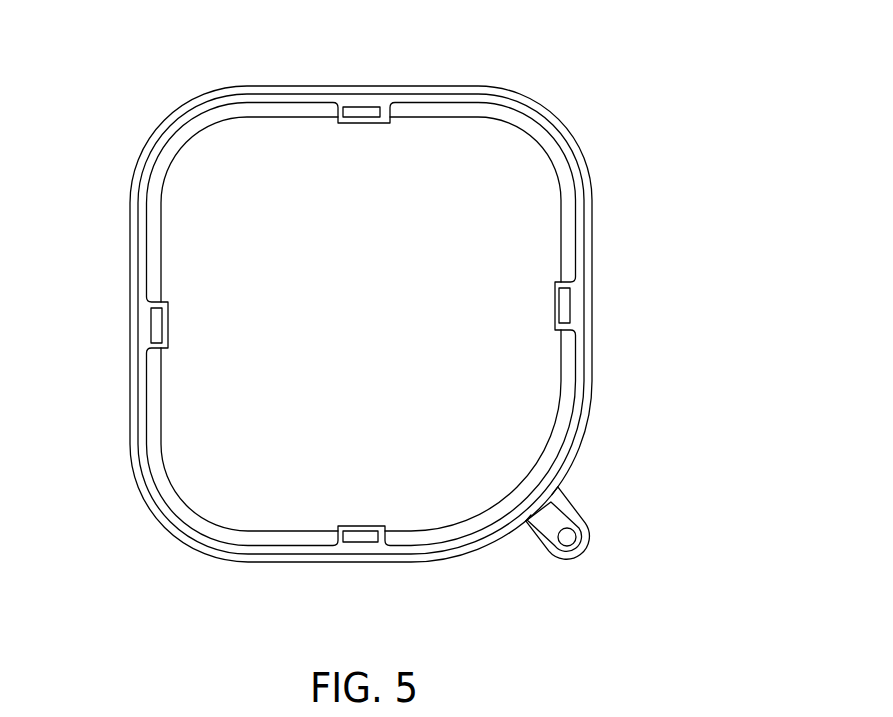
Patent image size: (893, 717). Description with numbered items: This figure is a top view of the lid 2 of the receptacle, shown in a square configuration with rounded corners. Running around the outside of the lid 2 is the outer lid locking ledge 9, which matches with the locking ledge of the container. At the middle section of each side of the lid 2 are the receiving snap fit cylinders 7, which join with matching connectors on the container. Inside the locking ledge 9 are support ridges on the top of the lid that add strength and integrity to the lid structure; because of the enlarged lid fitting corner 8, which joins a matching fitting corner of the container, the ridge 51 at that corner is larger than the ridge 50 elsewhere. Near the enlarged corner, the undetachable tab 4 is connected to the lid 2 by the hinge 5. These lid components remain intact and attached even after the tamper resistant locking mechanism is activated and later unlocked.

The lid 2 is at (652, 67).
The undetachable tab 4 is at (588, 523).
The hinge 5 is at (549, 487).
The receiving snap fit cylinders 7 is at (360, 113).
The lid fitting corner 8 is at (555, 410).
The lid locking ledge 9 is at (567, 128).
The ridge 50 is at (285, 113).
The ridge 51 is at (452, 525).